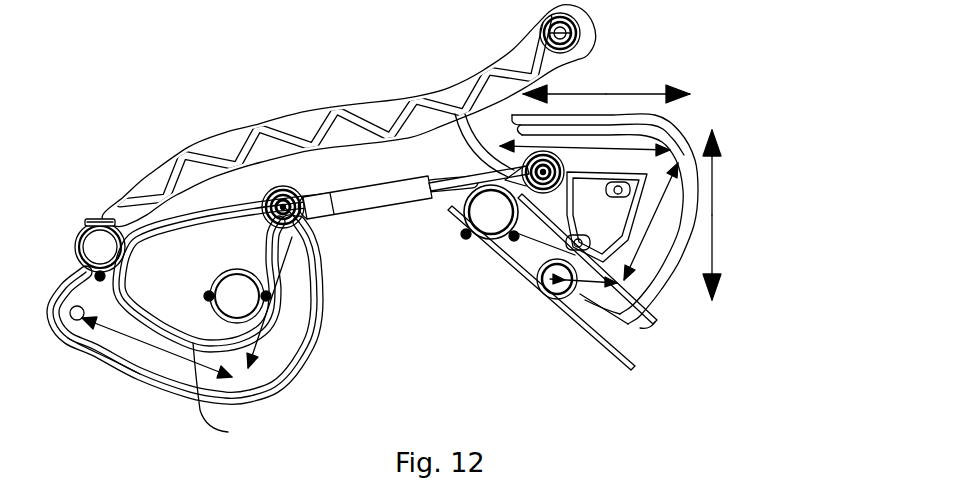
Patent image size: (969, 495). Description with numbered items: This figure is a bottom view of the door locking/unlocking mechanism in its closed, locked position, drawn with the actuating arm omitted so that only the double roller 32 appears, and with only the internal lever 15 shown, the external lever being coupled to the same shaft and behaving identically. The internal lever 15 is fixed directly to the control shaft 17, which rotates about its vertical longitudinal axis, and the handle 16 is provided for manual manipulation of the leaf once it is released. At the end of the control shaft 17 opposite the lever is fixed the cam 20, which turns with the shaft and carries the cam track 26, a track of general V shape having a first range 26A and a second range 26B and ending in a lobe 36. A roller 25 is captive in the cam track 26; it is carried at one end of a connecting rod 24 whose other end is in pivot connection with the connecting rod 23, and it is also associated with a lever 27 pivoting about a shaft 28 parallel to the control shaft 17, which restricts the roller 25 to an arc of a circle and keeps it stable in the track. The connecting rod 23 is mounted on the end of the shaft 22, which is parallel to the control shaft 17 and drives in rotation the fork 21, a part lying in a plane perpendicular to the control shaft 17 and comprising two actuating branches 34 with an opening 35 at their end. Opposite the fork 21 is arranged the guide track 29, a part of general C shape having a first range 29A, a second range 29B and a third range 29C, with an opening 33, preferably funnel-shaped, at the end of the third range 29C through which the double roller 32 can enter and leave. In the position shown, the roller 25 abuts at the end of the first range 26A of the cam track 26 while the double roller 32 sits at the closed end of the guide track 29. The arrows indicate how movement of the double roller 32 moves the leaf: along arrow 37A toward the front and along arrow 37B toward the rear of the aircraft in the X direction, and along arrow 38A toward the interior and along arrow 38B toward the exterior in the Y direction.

The internal lever 15 is at (349, 115).
The handle 16 is at (601, 37).
The control shaft 17 is at (84, 233).
The cam 20 is at (203, 310).
The fork 21 is at (475, 246).
The shaft 22 is at (413, 207).
The connecting rod 23 is at (548, 188).
The connecting rod 24 is at (318, 243).
The roller 25 is at (309, 187).
The cam track 26 is at (107, 381).
The first range 26A is at (308, 302).
The second range 26B is at (130, 346).
The lever 27 is at (295, 264).
The shaft 28 is at (213, 296).
The guide track 29 is at (635, 204).
The first range 29A is at (600, 311).
The second range 29B is at (601, 223).
The third range 29C is at (600, 127).
The double roller 32 is at (530, 302).
The opening 33 is at (462, 145).
The actuating branches 34 is at (607, 285).
The opening 35 is at (545, 315).
The lobe 36 is at (226, 395).
The arrow 37A is at (569, 82).
The arrow 37B is at (664, 80).
The arrow 38A is at (740, 257).
The arrow 38B is at (750, 172).